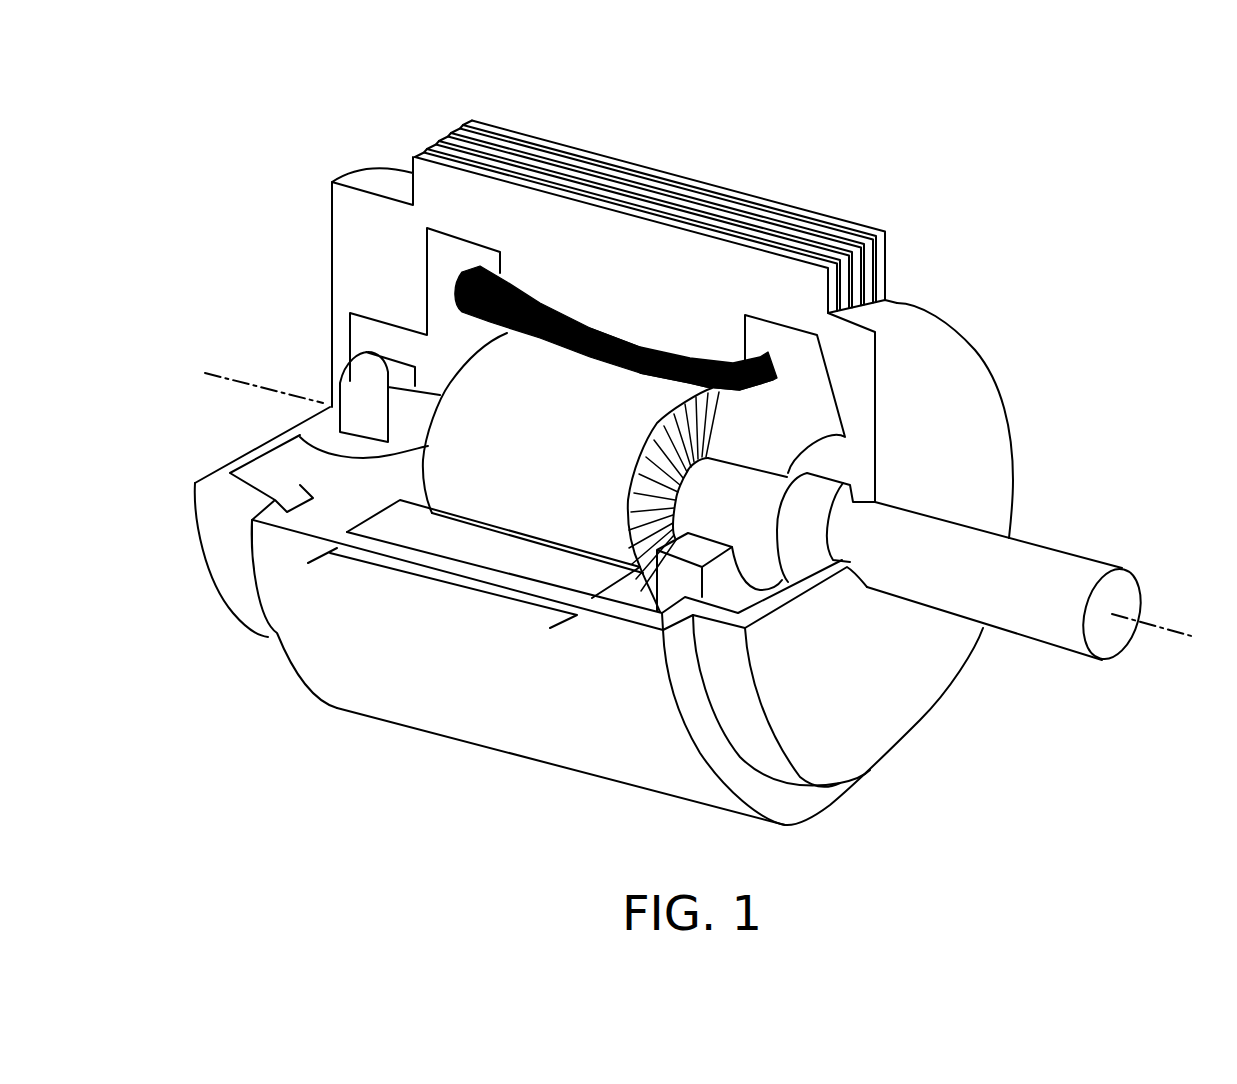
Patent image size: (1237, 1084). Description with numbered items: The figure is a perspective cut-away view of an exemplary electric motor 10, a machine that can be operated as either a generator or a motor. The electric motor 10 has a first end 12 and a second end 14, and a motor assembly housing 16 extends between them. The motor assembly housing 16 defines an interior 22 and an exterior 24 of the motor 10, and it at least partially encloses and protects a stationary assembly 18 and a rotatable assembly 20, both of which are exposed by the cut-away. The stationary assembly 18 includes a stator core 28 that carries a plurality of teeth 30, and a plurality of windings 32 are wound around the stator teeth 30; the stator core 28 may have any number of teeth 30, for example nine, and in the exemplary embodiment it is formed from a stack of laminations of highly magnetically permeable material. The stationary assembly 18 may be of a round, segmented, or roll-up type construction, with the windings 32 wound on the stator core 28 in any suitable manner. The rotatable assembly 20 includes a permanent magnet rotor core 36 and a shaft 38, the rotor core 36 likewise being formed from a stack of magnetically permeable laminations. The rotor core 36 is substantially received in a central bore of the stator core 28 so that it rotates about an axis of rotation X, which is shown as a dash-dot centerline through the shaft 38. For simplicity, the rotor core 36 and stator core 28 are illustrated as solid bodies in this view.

The electric motor 10 is at (985, 201).
The first end 12 is at (247, 153).
The second end 14 is at (1028, 308).
The motor assembly housing 16 is at (840, 223).
The stationary assembly 18 is at (573, 317).
The rotatable assembly 20 is at (475, 485).
The interior 22 is at (397, 284).
The exterior 24 is at (368, 160).
The stator core 28 is at (623, 328).
The teeth 30 is at (760, 320).
The windings 32 is at (657, 347).
The permanent magnet rotor core 36 is at (646, 530).
The shaft 38 is at (1087, 557).
The axis of rotation X is at (1177, 633).